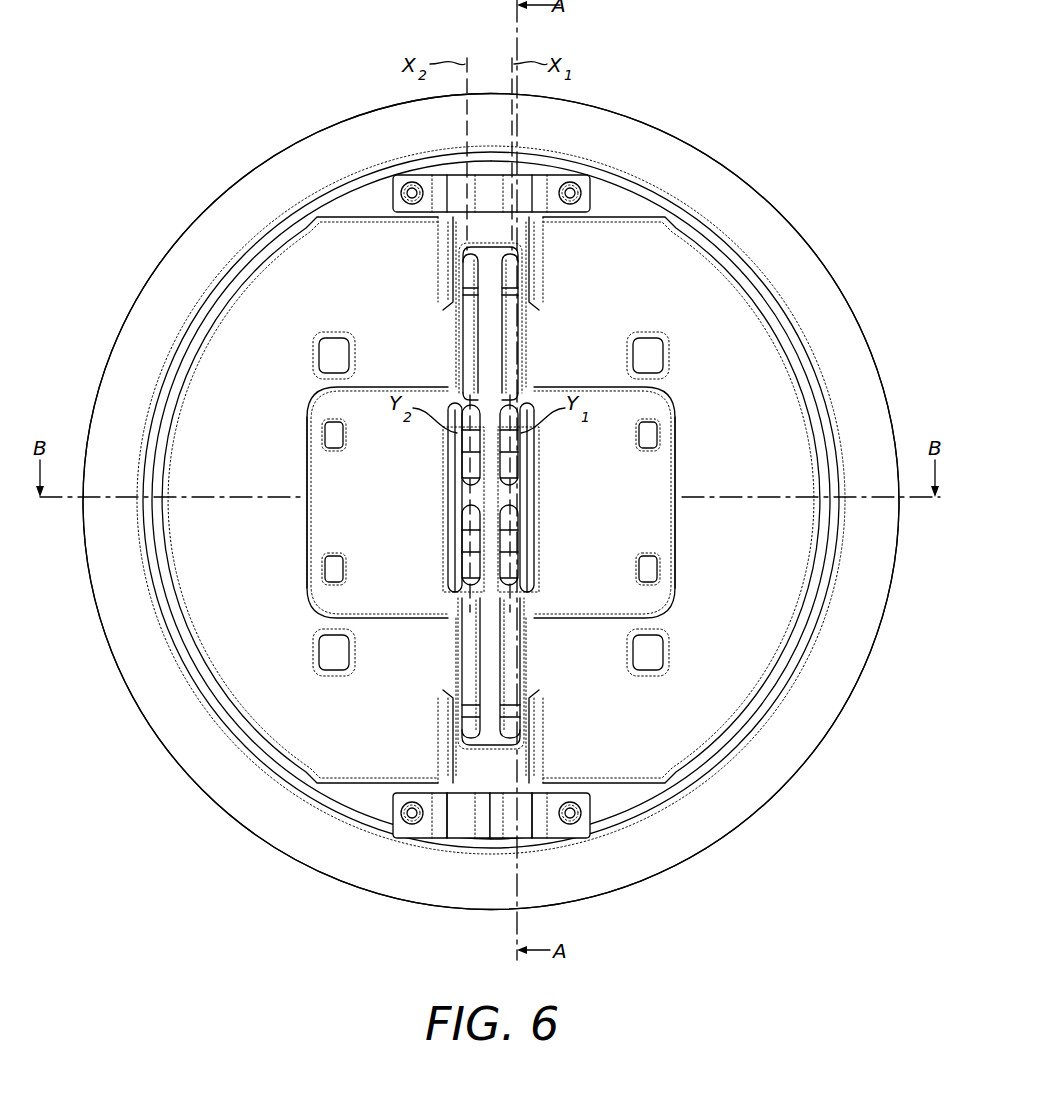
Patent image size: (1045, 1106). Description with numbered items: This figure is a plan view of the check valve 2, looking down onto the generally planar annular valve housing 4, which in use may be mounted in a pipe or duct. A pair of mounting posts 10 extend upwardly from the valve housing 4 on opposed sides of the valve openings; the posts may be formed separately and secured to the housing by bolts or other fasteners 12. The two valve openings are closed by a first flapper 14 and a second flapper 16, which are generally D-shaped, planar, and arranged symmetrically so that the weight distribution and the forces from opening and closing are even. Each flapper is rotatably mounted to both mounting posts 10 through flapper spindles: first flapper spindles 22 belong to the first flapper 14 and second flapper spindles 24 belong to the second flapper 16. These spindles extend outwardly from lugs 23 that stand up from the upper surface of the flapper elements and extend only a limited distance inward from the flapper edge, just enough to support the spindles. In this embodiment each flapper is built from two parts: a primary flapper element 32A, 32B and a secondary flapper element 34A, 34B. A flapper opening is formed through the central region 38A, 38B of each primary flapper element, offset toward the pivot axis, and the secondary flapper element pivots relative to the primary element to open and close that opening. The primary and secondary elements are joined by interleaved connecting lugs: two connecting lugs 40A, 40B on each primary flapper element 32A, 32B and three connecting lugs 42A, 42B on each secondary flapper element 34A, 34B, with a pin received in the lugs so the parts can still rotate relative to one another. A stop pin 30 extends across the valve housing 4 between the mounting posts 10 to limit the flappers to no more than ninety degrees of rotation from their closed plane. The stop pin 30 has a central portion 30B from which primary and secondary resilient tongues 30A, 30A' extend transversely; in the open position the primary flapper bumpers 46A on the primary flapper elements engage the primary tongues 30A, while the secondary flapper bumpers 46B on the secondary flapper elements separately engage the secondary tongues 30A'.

The check valve 2 is at (785, 95).
The valve housing 4 is at (768, 213).
The mounting post 10 is at (525, 823).
The fastener 12 is at (582, 815).
The first flapper 14 is at (778, 580).
The second flapper 16 is at (203, 580).
The first flapper spindle 22 is at (508, 845).
The lug 23 is at (472, 325).
The second flapper spindle 24 is at (467, 845).
The stop pin 30 is at (472, 767).
The primary resilient tongue 30A is at (550, 668).
The secondary resilient tongue 30A' is at (560, 354).
The central portion 30B is at (455, 472).
The primary flapper element 32A is at (775, 542).
The primary flapper element 32B is at (250, 542).
The secondary flapper element 34A is at (659, 489).
The secondary flapper element 34B is at (363, 489).
The central region 38A is at (698, 430).
The central region 38B is at (284, 430).
The connecting lug 40A is at (535, 527).
The connecting lug 40B is at (447, 527).
The connecting lug 42A is at (520, 576).
The connecting lug 42B is at (450, 576).
The primary flapper bumper 46A is at (655, 648).
The secondary flapper bumper 46B is at (648, 568).